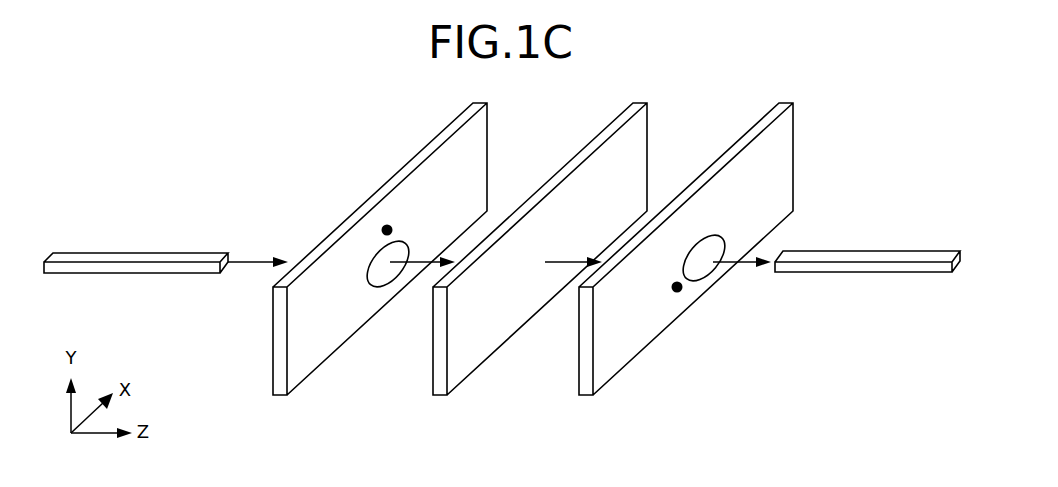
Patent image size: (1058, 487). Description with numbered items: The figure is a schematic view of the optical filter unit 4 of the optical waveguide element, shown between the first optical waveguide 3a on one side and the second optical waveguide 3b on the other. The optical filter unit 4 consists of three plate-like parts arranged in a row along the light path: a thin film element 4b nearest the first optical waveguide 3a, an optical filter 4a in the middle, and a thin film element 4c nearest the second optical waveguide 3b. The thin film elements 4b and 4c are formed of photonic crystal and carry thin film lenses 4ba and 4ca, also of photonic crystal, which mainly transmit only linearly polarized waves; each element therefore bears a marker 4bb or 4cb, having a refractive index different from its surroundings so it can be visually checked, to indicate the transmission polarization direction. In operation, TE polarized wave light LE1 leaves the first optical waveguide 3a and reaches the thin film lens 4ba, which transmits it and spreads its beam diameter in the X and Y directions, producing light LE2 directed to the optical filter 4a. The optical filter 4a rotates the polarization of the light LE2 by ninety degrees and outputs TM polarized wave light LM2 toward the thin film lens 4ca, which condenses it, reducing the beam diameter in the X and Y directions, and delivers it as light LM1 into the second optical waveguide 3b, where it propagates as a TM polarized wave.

The first optical waveguide 3a is at (160, 252).
The second optical waveguide 3b is at (903, 250).
The optical filter unit 4 is at (690, 66).
The optical filter 4a is at (595, 135).
The thin film element 4b is at (440, 135).
The thin film lens 4ba is at (378, 278).
The marker 4bb is at (386, 225).
The thin film element 4c is at (735, 140).
The thin film lens 4ca is at (717, 242).
The marker 4cb is at (677, 294).
The TE polarized wave light LE1 is at (257, 260).
The light LE2 is at (421, 257).
The TM polarized wave light LM1 is at (748, 266).
The TM polarized wave light LM2 is at (573, 257).